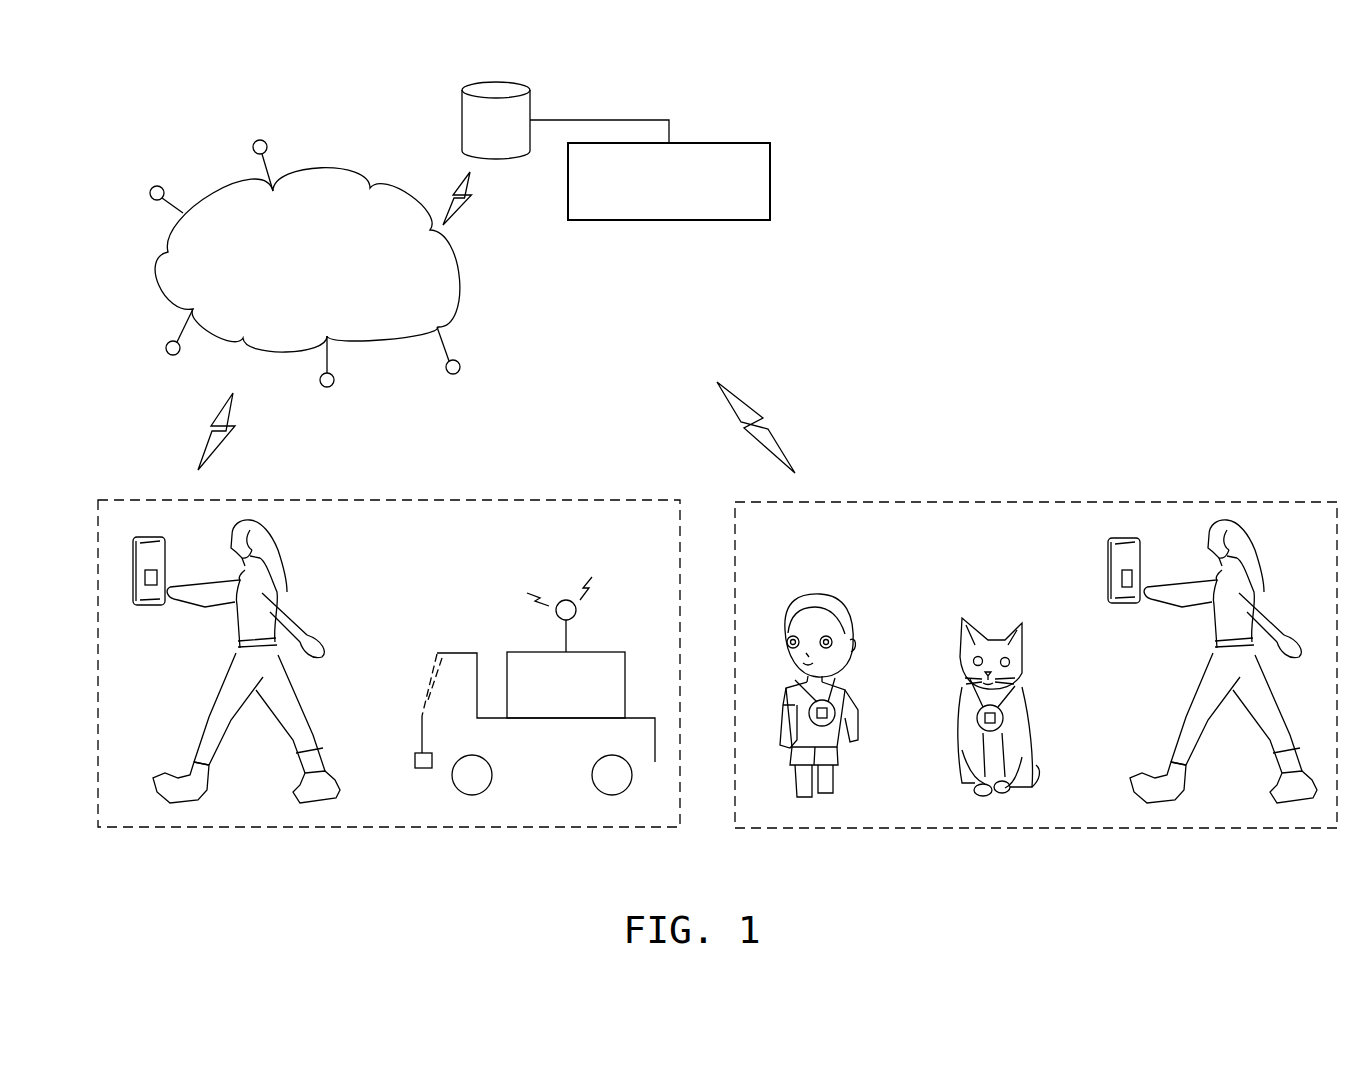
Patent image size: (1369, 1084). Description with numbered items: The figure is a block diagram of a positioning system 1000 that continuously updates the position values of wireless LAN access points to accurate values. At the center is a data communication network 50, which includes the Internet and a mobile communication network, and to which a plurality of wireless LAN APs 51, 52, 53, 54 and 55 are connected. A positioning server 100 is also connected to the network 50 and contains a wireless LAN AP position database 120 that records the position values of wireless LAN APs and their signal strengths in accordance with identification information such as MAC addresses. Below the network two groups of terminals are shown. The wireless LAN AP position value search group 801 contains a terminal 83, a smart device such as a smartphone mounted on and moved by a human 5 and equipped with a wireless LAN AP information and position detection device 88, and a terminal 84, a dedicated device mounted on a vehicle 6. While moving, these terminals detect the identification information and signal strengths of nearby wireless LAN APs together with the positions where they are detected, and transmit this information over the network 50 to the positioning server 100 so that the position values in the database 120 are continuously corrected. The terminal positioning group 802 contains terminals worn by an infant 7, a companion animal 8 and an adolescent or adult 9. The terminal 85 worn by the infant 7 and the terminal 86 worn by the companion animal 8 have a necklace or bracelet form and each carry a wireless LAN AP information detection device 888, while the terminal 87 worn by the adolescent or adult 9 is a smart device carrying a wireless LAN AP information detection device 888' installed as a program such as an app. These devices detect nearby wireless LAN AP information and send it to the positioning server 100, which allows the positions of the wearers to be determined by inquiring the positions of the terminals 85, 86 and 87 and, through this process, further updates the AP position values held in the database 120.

The positioning system 1000 is at (67, 81).
The data communication network 50 is at (455, 273).
The wireless LAN access point 51 is at (258, 140).
The wireless LAN access point 52 is at (150, 191).
The wireless LAN access point 53 is at (166, 349).
The wireless LAN access point 54 is at (327, 387).
The wireless LAN access point 55 is at (460, 366).
The positioning server 100 is at (462, 110).
The wireless LAN AP position database 120 is at (770, 183).
The wireless LAN AP position value search group 801 is at (385, 828).
The terminal positioning group 802 is at (1063, 828).
The human 5 is at (272, 584).
The terminal 83 is at (147, 537).
The wireless LAN AP information and position detection device 88 is at (155, 585).
The vehicle 6 is at (465, 654).
The terminal 84 is at (608, 654).
The infant 7 is at (816, 597).
The terminal 85 is at (831, 700).
The companion animal 8 is at (992, 632).
The terminal 86 is at (1001, 707).
The wireless LAN AP information detection device 888 is at (951, 727).
The wireless LAN AP information detection device 888' is at (1126, 613).
The adolescent or adult 9 is at (1223, 661).
The terminal 87 is at (1108, 560).